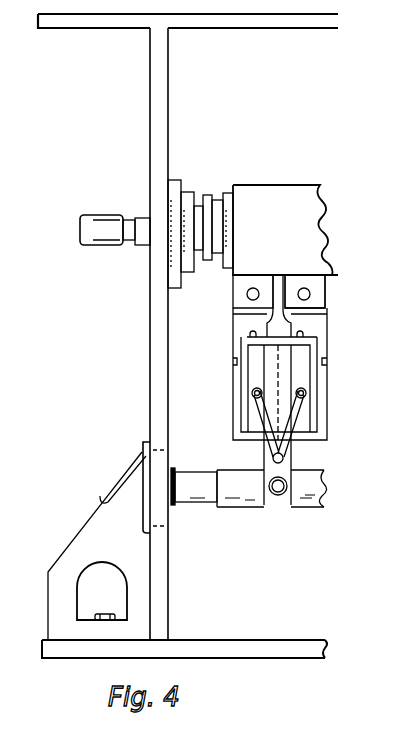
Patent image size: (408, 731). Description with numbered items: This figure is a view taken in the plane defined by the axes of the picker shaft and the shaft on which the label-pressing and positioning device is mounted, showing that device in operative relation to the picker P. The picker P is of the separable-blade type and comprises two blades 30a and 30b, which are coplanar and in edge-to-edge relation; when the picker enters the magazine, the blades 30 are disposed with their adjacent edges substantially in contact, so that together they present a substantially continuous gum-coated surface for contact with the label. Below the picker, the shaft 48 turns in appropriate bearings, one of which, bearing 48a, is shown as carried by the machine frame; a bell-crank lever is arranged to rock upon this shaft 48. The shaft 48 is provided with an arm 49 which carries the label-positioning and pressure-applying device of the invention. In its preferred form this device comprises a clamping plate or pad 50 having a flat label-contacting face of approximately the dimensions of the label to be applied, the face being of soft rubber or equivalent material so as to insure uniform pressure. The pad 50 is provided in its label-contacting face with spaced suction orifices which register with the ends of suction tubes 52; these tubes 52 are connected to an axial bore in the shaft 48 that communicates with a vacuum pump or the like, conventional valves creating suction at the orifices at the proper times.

The picker blade 30 is at (198, 210).
The picker blade 30a is at (245, 326).
The picker blade 30b is at (325, 328).
The picker P is at (351, 304).
The arm 49 is at (297, 458).
The clamping plate or pad 50 is at (300, 381).
The suction tubes 52 is at (295, 423).
The shaft 48 is at (202, 495).
The bearing 48a is at (178, 468).